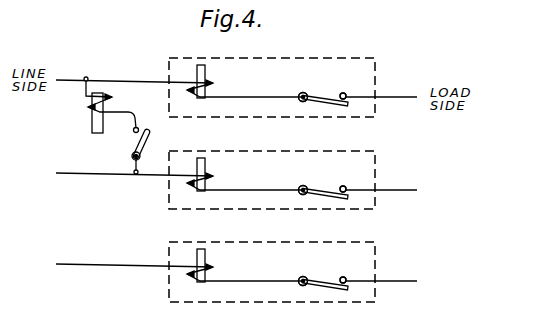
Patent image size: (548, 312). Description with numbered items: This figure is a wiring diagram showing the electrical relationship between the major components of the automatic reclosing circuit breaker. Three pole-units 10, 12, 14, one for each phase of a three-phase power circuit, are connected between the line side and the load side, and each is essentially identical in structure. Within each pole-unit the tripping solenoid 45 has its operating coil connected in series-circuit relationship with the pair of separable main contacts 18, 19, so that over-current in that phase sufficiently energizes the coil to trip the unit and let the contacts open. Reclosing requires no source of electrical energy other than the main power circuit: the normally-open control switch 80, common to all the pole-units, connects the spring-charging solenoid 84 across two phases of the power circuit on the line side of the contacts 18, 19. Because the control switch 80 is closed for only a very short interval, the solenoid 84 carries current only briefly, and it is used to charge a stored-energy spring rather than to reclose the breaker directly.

The pole-unit 10 is at (298, 58).
The pole-unit 12 is at (298, 151).
The pole-unit 14 is at (298, 242).
The tripping solenoid 45 is at (232, 86).
The movable contact 18 is at (319, 96).
The stationary contact 19 is at (344, 93).
The spring-charging solenoid 84 is at (86, 127).
The control switch 80 is at (163, 159).